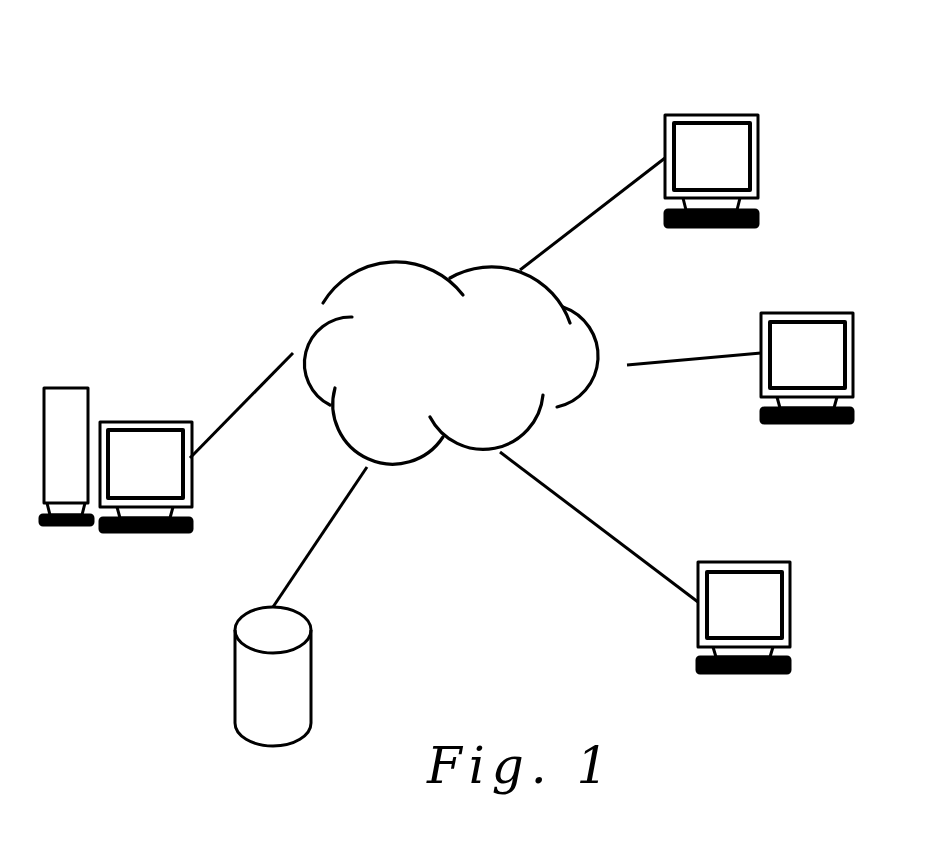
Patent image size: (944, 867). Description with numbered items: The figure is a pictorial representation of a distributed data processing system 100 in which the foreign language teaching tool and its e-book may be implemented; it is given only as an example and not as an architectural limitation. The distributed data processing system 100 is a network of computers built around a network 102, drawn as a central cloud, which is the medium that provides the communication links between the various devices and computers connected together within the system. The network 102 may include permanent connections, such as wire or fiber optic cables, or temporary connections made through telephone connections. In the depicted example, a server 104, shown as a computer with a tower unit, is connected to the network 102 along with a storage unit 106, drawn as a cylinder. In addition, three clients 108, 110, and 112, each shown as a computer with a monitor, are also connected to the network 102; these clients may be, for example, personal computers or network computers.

The distributed data processing system 100 is at (297, 121).
The network 102 is at (475, 357).
The server 104 is at (145, 422).
The storage unit 106 is at (233, 675).
The client 108 is at (665, 133).
The client 110 is at (808, 313).
The client 112 is at (743, 673).